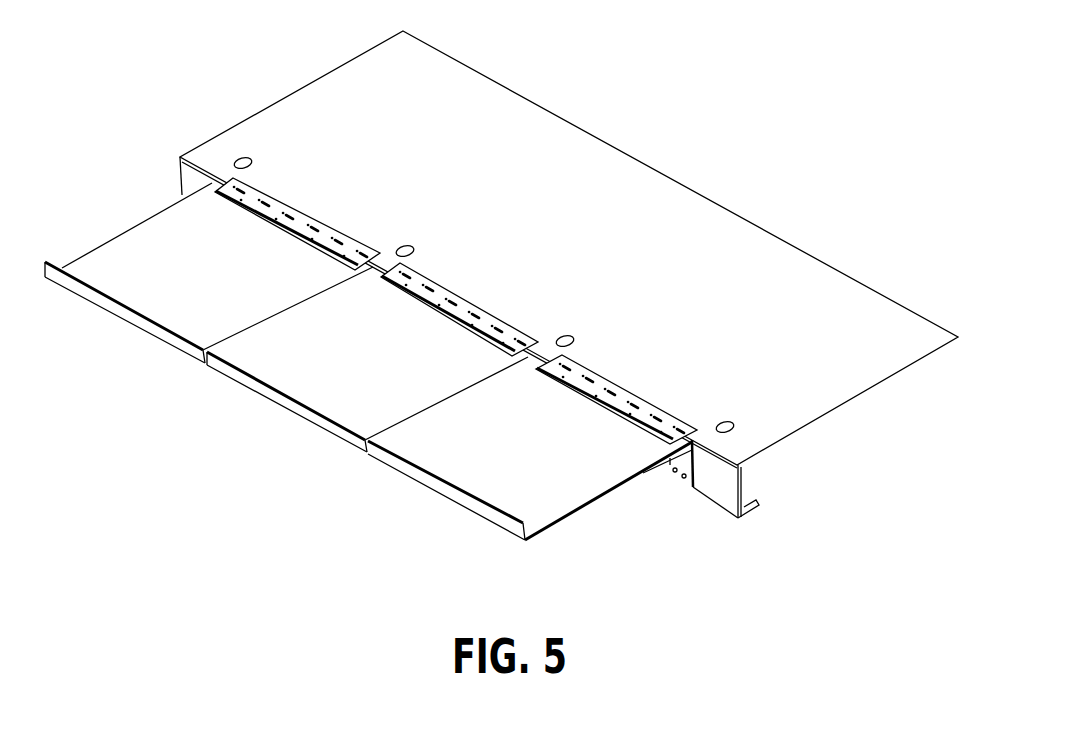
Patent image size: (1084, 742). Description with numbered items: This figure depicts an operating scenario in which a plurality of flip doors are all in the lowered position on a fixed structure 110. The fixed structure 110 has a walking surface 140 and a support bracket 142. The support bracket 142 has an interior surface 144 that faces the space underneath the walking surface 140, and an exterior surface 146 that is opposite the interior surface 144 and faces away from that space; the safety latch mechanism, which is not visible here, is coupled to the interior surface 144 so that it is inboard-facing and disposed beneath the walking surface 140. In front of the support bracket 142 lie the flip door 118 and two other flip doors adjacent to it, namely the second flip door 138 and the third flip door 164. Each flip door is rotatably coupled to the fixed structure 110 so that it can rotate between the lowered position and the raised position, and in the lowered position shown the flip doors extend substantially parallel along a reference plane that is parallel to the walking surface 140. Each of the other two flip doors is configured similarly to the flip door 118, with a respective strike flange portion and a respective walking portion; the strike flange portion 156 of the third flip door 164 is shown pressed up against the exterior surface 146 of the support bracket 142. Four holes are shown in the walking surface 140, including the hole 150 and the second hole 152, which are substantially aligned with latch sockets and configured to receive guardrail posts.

The fixed structure 110 is at (501, 318).
The walking surface 140 is at (572, 146).
The hole 150 is at (407, 247).
The second hole 152 is at (568, 332).
The second flip door 138 is at (147, 287).
The flip door 118 is at (332, 387).
The third flip door 164 is at (515, 485).
The strike flange portion 156 is at (682, 463).
The exterior surface 146 is at (723, 488).
The interior surface 144 is at (743, 477).
The support bracket 142 is at (748, 522).